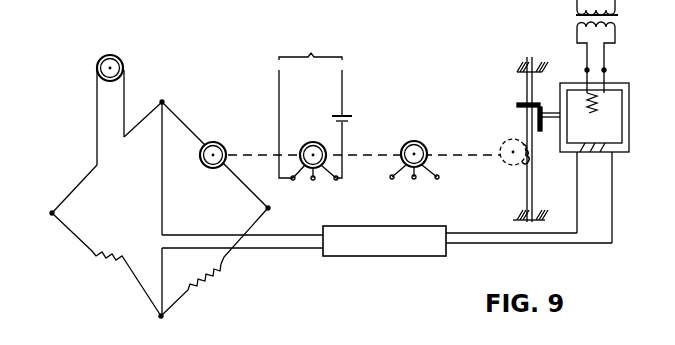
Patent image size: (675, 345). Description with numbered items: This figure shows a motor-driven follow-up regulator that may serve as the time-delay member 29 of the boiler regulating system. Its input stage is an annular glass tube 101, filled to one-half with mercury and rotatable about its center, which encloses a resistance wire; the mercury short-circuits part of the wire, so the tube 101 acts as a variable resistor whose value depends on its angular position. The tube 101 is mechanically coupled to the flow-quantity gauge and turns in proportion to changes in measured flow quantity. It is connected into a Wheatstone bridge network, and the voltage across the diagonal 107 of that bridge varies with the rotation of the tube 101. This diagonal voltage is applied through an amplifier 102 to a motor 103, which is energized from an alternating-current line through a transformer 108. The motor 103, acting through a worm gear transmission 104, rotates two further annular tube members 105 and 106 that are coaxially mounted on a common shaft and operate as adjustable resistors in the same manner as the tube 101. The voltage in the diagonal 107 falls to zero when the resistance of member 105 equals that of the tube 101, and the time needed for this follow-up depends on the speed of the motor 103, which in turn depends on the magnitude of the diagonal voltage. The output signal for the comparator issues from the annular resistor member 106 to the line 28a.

The annular glass tube 101 is at (123, 62).
The diagonal of Wheatstone bridge network 107 is at (160, 190).
The annular tube member 105 is at (228, 138).
The line 28a is at (315, 105).
The annular tube member 106 is at (308, 136).
The time-delay member 29 is at (413, 143).
The worm gear transmission 104 is at (527, 160).
The motor 103 is at (630, 105).
The transformer 108 is at (619, 15).
The amplifier 102 is at (432, 257).